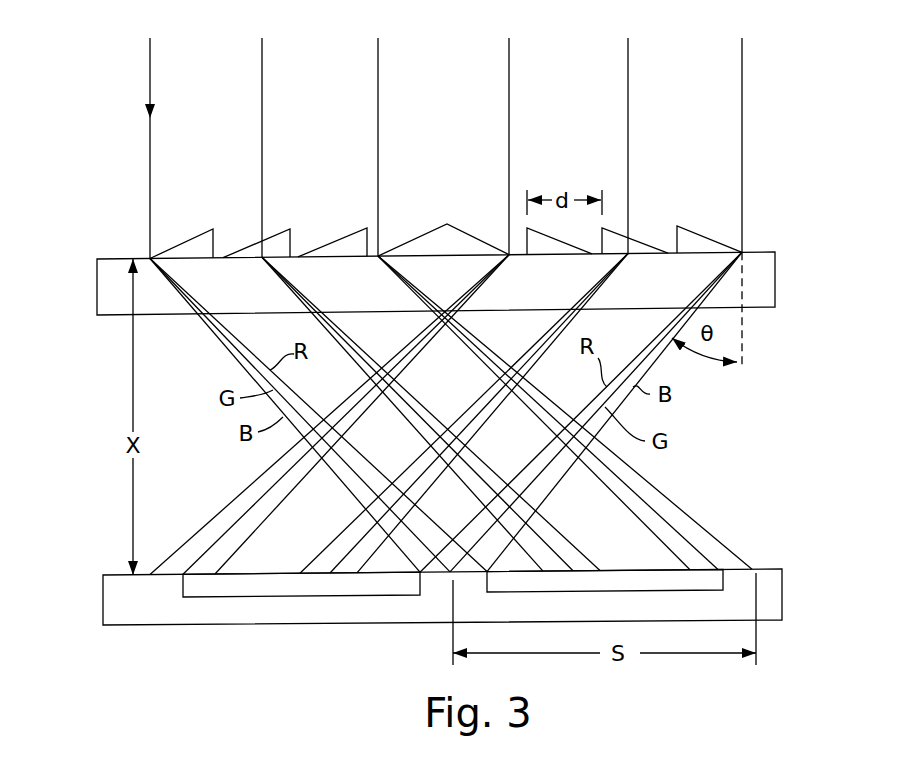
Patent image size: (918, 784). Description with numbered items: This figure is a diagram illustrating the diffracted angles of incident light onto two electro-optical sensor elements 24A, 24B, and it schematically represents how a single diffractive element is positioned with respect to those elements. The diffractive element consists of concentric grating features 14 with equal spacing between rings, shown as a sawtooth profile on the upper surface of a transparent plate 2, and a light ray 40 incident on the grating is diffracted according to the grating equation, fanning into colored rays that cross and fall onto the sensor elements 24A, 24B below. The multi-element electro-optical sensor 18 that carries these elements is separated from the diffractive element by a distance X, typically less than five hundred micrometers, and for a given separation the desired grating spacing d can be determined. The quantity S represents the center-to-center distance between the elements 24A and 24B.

The light ray 40 is at (148, 73).
The concentric grating features 14 is at (201, 242).
The transparent substrate plate 2 is at (720, 309).
The multi-element electro-optical sensor 18 is at (183, 613).
The electro-optical sensor element 24A is at (262, 583).
The electro-optical sensor element 24B is at (682, 578).